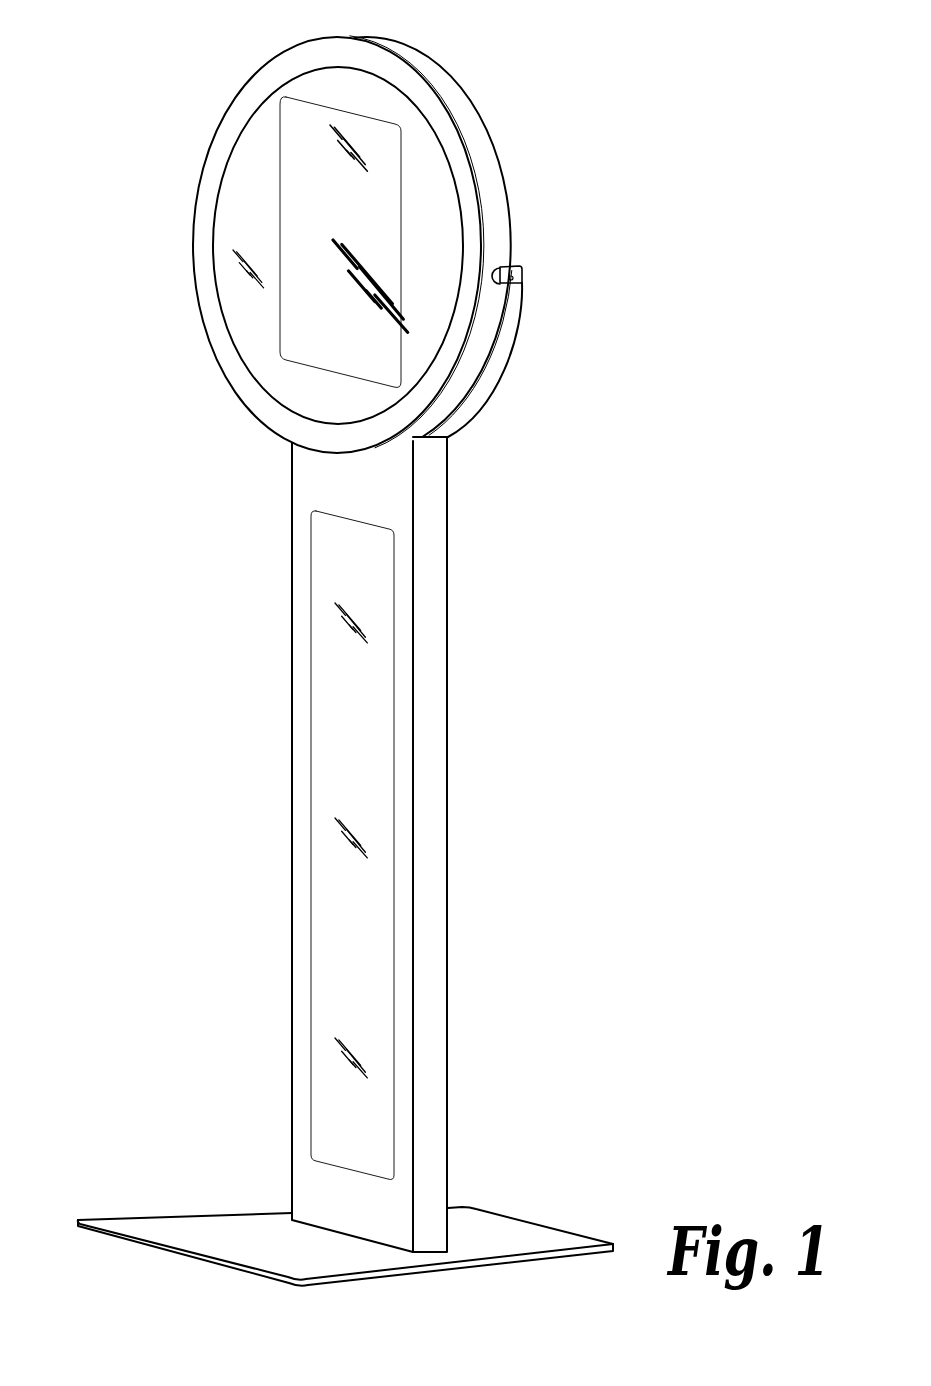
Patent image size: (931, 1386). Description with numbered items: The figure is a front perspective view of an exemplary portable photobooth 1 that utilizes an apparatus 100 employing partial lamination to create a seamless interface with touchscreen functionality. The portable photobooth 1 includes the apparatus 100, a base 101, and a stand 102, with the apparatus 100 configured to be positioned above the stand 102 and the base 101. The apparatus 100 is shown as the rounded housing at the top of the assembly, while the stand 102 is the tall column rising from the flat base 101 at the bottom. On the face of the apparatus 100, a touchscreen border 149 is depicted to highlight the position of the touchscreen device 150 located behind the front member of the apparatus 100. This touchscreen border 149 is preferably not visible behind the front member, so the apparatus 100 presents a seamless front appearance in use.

The portable photobooth 1 is at (593, 470).
The apparatus 100 is at (185, 268).
The touchscreen border 149 is at (278, 118).
The touchscreen device 150 is at (382, 203).
The stand 102 is at (432, 732).
The base 101 is at (518, 1233).